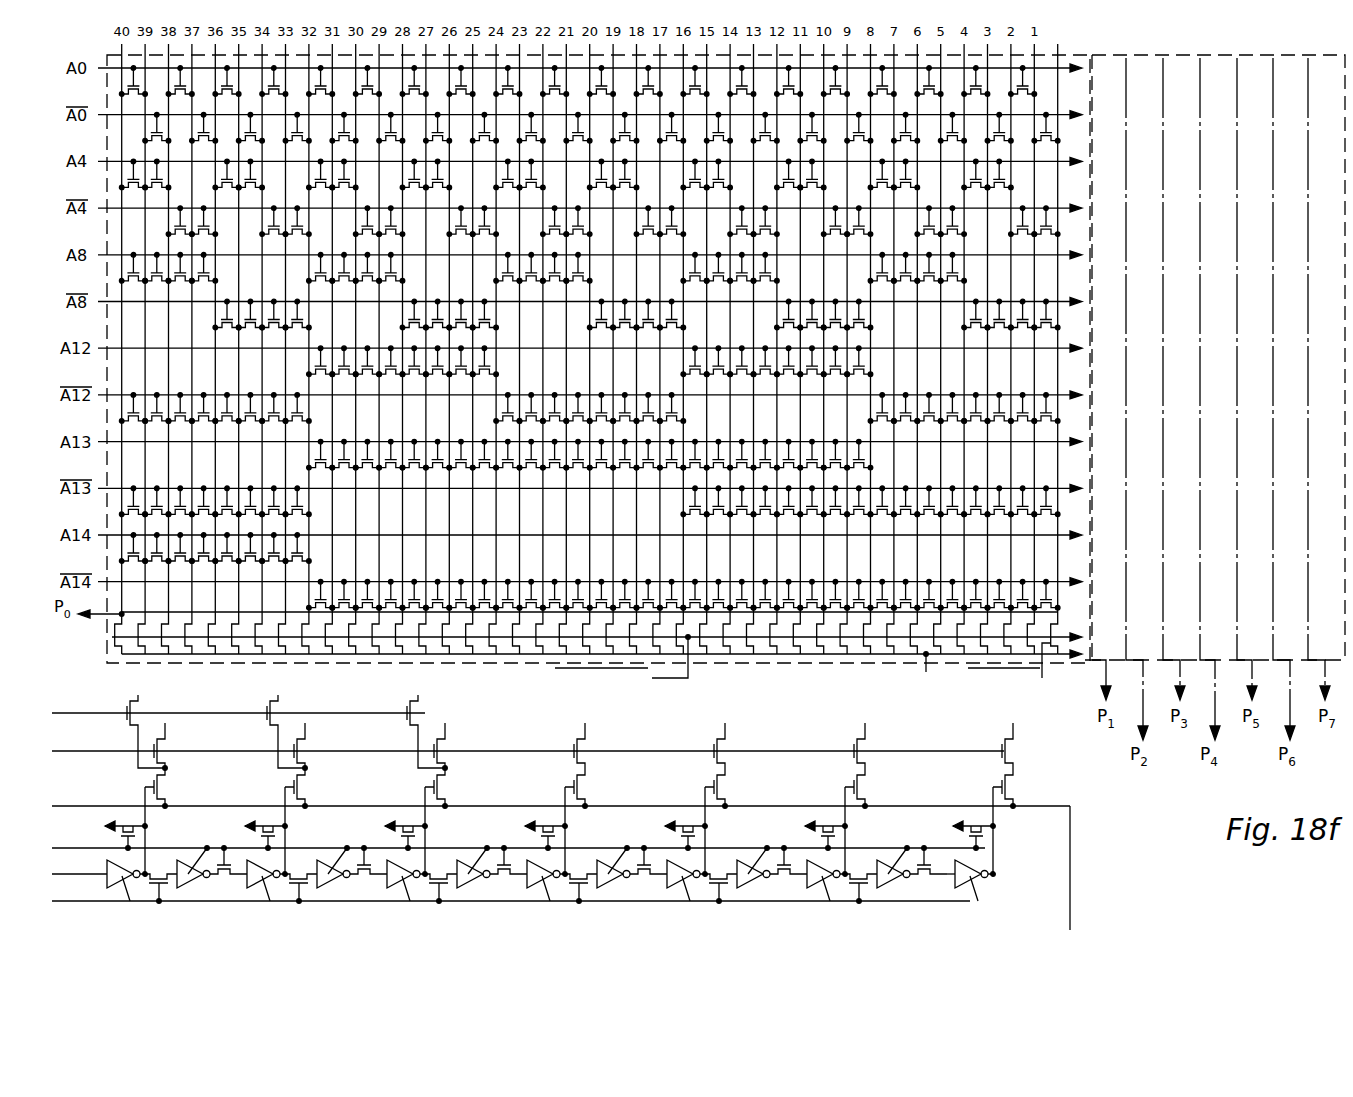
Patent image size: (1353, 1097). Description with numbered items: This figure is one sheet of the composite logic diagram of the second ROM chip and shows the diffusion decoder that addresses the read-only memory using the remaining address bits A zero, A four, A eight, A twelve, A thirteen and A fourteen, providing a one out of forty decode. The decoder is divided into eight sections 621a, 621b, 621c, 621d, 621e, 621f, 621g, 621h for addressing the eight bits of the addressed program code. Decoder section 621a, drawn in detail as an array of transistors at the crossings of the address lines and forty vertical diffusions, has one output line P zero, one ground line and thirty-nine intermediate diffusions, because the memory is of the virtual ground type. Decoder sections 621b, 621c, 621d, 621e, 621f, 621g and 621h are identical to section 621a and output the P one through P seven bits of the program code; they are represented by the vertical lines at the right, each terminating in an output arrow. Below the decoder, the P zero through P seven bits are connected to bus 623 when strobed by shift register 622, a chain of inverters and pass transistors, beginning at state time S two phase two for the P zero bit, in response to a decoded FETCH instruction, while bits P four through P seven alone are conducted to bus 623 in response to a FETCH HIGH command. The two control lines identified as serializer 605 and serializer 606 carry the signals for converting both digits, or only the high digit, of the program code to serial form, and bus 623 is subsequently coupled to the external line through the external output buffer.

The decoder section 621a is at (550, 521).
The decoder section 621b is at (1116, 463).
The decoder section 621c is at (1151, 396).
The decoder section 621d is at (1187, 330).
The decoder section 621e is at (1223, 268).
The decoder section 621f is at (1259, 212).
The decoder section 621g is at (1296, 159).
The decoder section 621h is at (1331, 98).
The serializer 605 is at (385, 778).
The serializer 606 is at (385, 705).
The shift register 622 is at (1050, 895).
The bus 623 is at (1073, 842).